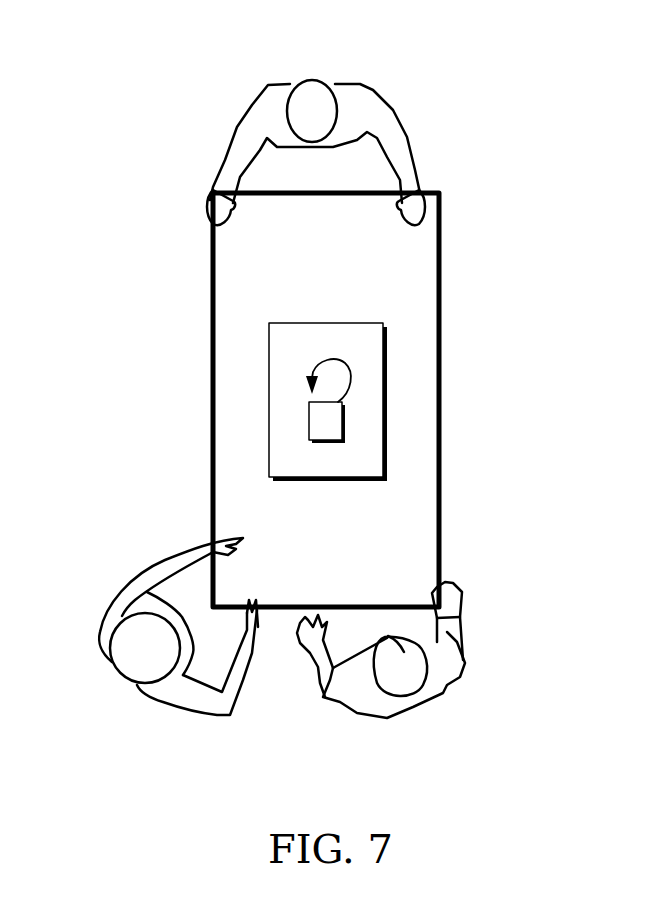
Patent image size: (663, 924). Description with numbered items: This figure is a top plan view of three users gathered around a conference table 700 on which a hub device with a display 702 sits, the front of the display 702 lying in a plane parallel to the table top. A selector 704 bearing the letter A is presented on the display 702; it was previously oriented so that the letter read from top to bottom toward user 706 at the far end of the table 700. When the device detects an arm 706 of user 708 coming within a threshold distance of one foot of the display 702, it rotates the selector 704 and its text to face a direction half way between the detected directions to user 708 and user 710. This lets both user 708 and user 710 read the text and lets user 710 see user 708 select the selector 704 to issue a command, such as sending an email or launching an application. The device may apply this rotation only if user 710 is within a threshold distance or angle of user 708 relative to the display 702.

The conference table 700 is at (211, 417).
The display 702 is at (327, 323).
The selector 704 is at (333, 440).
The user / arm of user 706 is at (312, 78).
The user 708 is at (118, 678).
The user 710 is at (445, 692).